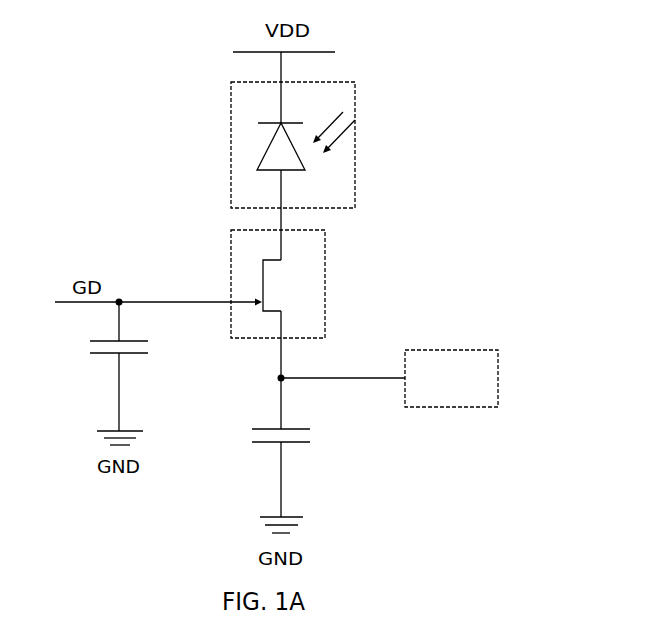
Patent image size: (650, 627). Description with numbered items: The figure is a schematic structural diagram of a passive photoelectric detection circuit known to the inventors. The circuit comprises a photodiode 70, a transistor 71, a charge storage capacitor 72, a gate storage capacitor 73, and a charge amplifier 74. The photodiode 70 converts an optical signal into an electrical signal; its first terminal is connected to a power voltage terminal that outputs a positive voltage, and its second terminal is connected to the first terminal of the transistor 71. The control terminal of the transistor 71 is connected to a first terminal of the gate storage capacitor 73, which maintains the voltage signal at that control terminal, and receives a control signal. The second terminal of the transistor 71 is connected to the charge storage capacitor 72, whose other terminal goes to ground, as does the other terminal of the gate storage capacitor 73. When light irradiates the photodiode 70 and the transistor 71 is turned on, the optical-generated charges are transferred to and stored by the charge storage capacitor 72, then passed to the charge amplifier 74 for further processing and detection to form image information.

The photodiode 70 is at (232, 123).
The transistor 71 is at (230, 263).
The charge storage capacitor 72 is at (267, 428).
The gate storage capacitor 73 is at (105, 356).
The charge amplifier 74 is at (417, 350).